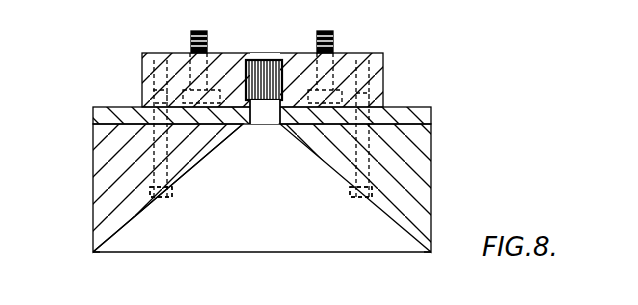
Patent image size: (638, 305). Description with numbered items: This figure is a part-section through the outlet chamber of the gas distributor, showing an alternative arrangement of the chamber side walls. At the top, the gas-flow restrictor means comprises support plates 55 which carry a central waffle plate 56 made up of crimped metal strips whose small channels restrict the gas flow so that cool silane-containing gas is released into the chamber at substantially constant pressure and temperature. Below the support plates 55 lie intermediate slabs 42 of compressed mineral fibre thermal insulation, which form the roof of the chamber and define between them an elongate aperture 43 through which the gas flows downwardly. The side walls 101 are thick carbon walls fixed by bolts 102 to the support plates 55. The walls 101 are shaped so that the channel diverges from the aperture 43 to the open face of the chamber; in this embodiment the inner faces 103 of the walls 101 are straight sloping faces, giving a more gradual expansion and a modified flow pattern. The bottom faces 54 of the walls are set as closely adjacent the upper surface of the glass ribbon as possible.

The slabs of compressed mineral fibre thermal insulation material 42 is at (97, 108).
The elongate aperture 43 is at (270, 117).
The bottom faces 54 is at (94, 253).
The support plates 55 is at (148, 58).
The central waffle plate 56 is at (258, 60).
The side walls 101 is at (105, 169).
The bolts 102 is at (165, 195).
The inner faces 103 is at (140, 213).